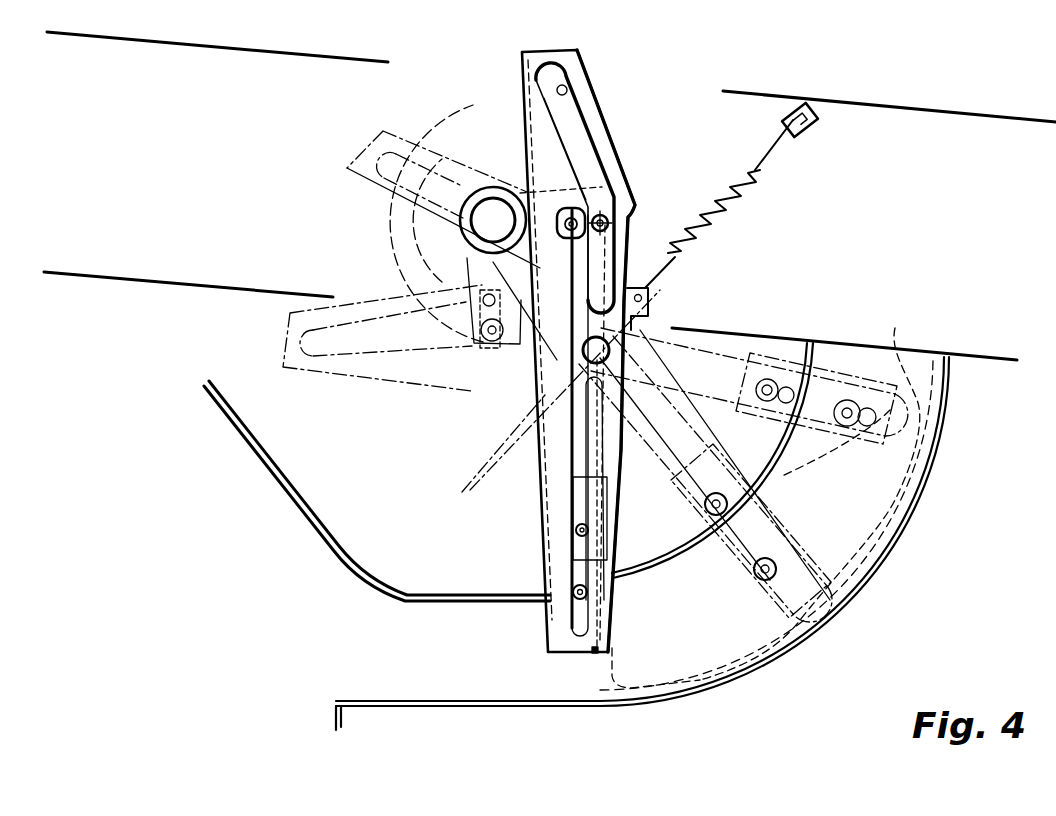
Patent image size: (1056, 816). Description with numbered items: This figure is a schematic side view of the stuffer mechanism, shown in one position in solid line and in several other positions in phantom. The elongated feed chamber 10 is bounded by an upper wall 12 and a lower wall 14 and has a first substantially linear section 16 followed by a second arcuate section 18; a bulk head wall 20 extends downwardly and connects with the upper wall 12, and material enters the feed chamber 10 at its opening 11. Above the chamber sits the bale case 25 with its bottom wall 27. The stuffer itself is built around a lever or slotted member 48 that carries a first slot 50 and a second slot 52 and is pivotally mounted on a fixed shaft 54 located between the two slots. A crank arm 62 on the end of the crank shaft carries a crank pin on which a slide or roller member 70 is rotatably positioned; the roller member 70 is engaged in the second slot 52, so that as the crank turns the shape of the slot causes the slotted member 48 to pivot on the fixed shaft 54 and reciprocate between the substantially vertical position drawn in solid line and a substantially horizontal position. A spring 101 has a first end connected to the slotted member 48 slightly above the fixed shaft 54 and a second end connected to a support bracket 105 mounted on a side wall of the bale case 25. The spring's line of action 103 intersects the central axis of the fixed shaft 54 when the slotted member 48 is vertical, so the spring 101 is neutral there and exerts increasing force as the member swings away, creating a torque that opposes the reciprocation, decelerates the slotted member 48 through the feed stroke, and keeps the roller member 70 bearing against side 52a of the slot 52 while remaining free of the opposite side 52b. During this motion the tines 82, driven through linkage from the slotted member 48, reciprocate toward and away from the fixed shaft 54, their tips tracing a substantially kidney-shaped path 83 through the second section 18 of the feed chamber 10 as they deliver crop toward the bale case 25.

The feed chamber 10 is at (858, 600).
The opening 11 is at (333, 656).
The upper wall 12 is at (453, 592).
The lower wall 14 is at (448, 708).
The first substantially linear section 16 is at (430, 695).
The second arcuate section 18 is at (930, 455).
The bulk head wall 20 is at (224, 413).
The bale case 25 is at (962, 108).
The bottom wall 27 is at (985, 348).
The slotted member 48 is at (543, 52).
The first slot 50 is at (572, 625).
The second slot 52 is at (578, 128).
The side of slot 52a is at (575, 157).
The side of slot 52b is at (573, 93).
The fixed shaft 54 is at (608, 345).
The crank arm 62 is at (556, 218).
The roller member 70 is at (631, 197).
The tine 82 is at (895, 332).
The kidney-shaped path 83 is at (905, 502).
The spring 101 is at (715, 225).
The line of action 103 is at (466, 488).
The support bracket 105 is at (805, 138).